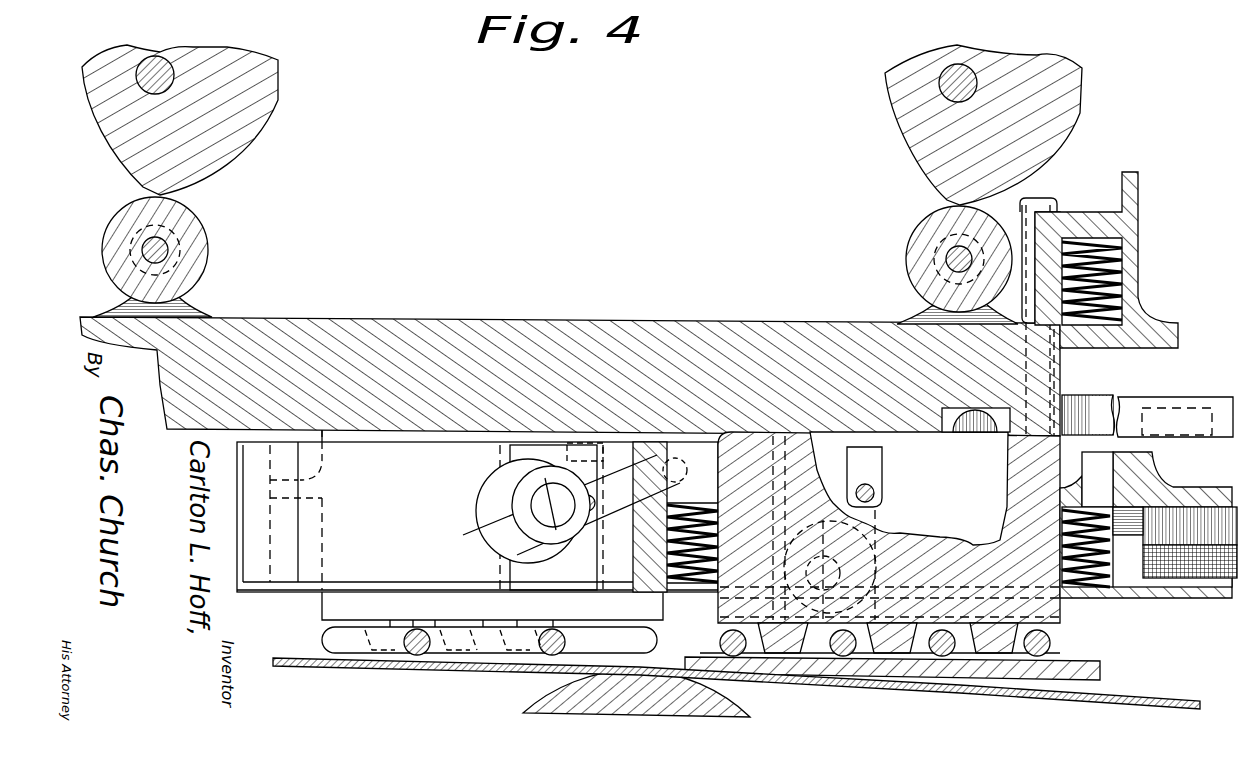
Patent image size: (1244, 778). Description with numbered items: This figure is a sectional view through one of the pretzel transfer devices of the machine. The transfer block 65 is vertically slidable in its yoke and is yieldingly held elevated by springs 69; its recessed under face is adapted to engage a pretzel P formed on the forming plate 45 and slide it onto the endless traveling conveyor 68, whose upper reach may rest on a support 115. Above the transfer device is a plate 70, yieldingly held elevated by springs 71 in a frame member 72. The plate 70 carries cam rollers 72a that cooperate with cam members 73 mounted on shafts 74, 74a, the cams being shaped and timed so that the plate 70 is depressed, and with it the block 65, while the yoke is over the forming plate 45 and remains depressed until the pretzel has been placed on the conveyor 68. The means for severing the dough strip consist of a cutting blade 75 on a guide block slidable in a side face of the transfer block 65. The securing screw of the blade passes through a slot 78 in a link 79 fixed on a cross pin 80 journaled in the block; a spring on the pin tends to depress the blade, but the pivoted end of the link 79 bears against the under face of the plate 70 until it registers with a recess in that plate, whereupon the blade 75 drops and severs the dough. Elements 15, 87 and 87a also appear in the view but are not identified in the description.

The plate 70 is at (704, 332).
The post 15 is at (1046, 203).
The frame member 72 is at (1128, 295).
The springs 71 is at (1120, 271).
The cam members 73 is at (233, 162).
The shaft 74 is at (162, 68).
The shaft 74a is at (940, 90).
The cam rollers 72a is at (212, 258).
The cutting blade 75 is at (553, 517).
The slot 78 is at (480, 527).
The link 79 is at (512, 496).
The cross pin 80 is at (593, 505).
The transfer block 65 is at (1053, 613).
The springs 69 is at (694, 592).
The bar 87 is at (1002, 413).
The bar extension 87a is at (1147, 392).
The pretzel P is at (657, 641).
The forming plate 45 is at (1102, 670).
The endless traveling conveyor 68 is at (789, 678).
The support 115 is at (705, 679).